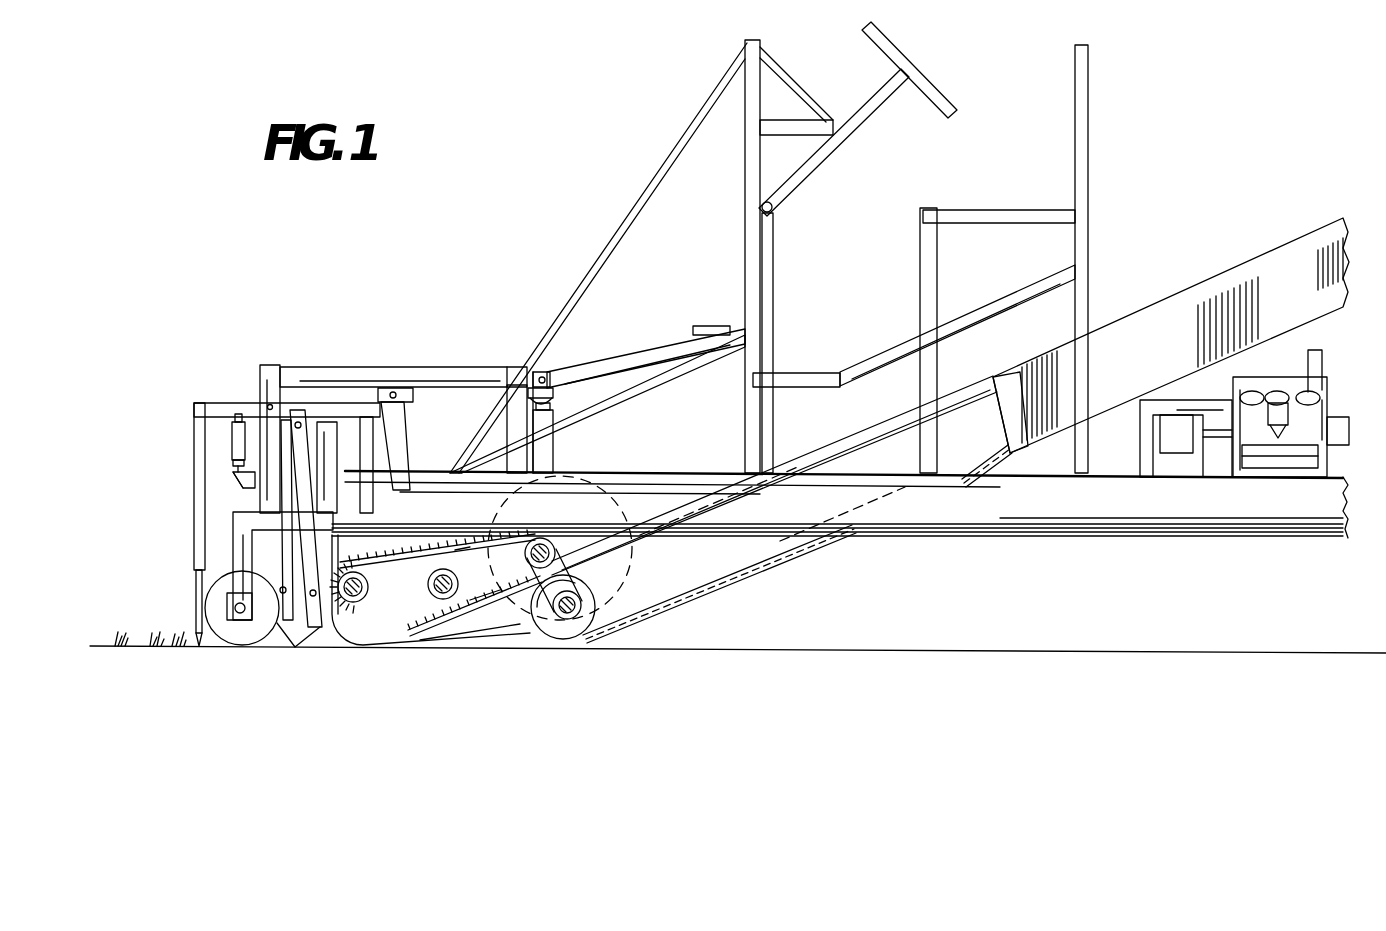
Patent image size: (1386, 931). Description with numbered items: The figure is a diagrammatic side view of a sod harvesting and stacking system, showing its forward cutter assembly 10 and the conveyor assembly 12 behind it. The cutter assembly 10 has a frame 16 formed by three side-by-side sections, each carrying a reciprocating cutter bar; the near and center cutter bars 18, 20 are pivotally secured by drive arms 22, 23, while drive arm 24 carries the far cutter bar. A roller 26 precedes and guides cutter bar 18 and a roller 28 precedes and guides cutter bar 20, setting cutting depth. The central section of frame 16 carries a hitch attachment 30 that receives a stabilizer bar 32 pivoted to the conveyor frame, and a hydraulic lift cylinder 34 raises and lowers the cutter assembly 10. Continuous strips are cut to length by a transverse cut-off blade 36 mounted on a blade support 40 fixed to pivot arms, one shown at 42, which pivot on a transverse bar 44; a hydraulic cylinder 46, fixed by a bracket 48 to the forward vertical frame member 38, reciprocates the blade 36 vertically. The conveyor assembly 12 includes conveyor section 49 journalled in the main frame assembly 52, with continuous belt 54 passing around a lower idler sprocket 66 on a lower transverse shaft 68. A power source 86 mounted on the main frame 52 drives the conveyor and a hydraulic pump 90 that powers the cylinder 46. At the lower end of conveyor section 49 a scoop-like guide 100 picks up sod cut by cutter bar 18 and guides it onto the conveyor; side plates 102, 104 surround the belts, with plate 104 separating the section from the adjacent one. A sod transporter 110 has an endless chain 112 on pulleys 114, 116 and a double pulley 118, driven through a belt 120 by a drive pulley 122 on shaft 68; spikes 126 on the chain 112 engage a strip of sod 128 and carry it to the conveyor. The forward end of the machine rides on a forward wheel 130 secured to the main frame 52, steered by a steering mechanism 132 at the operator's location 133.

The cutter assembly 10 is at (232, 370).
The conveyor assembly 12 is at (1244, 240).
The frame 16 is at (322, 370).
The cutter bar 18 is at (299, 648).
The cutter bar 20 is at (410, 648).
The drive arm 22 is at (240, 520).
The drive arm 23 is at (400, 437).
The drive arm 24 is at (292, 540).
The roller 26 is at (243, 650).
The roller 28 is at (365, 647).
The hitch attachment 30 is at (558, 362).
The stabilizer bar 32 is at (656, 334).
The hydraulic lift cylinder 34 is at (556, 450).
The transverse cut-off blade 36 is at (196, 646).
The forward vertical frame member 38 is at (272, 382).
The blade support 40 is at (196, 608).
The pivot arm 42 is at (194, 410).
The transverse bar 44 is at (267, 405).
The hydraulic cylinder 46 is at (237, 440).
The bracket 48 is at (245, 482).
The conveyor section 49 is at (794, 561).
The main frame assembly 52 is at (978, 522).
The continuous belt 54 is at (655, 537).
The lower idler sprocket 66 is at (600, 623).
The lower transverse shaft 68 is at (568, 650).
The power source 86 is at (1275, 388).
The hydraulic pump 90 is at (1178, 424).
The guide 100 is at (464, 636).
The side plate 102 is at (1048, 430).
The side plate 104 is at (345, 535).
The sod transporter 110 is at (387, 585).
The endless chain 112 is at (465, 559).
The pulley 114 is at (354, 604).
The pulley 116 is at (430, 584).
The double pulley 118 is at (539, 537).
The belt 120 is at (620, 579).
The drive pulley 122 is at (640, 610).
The spikes 126 is at (403, 520).
The strip of sod 128 is at (484, 600).
The forward wheel 130 is at (625, 478).
The steering mechanism 132 is at (821, 196).
The operator's location 133 is at (982, 100).